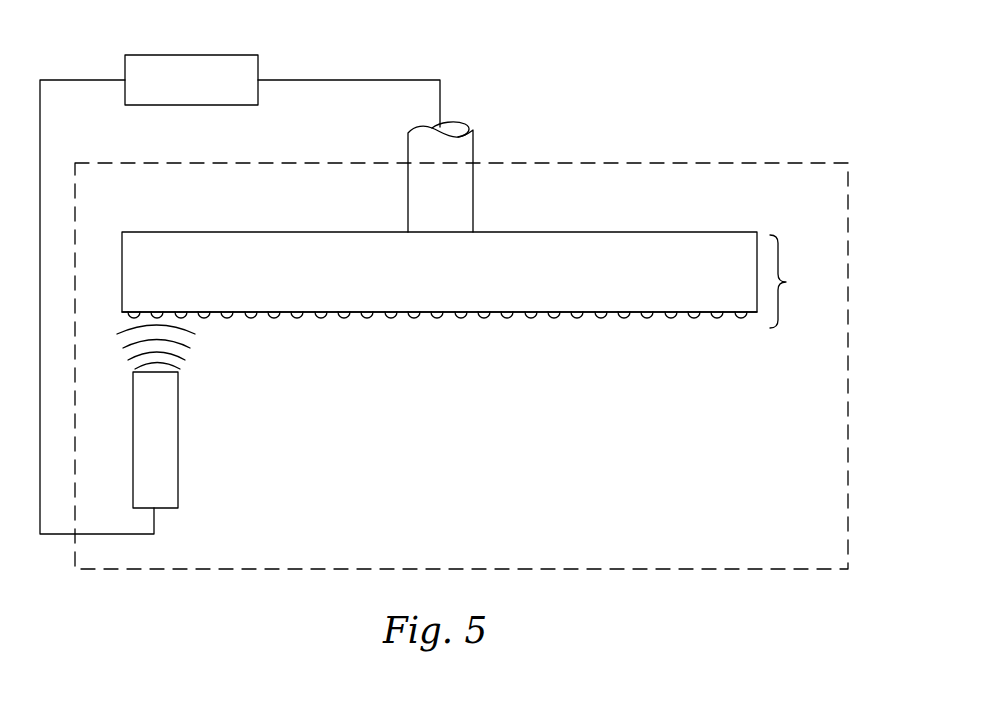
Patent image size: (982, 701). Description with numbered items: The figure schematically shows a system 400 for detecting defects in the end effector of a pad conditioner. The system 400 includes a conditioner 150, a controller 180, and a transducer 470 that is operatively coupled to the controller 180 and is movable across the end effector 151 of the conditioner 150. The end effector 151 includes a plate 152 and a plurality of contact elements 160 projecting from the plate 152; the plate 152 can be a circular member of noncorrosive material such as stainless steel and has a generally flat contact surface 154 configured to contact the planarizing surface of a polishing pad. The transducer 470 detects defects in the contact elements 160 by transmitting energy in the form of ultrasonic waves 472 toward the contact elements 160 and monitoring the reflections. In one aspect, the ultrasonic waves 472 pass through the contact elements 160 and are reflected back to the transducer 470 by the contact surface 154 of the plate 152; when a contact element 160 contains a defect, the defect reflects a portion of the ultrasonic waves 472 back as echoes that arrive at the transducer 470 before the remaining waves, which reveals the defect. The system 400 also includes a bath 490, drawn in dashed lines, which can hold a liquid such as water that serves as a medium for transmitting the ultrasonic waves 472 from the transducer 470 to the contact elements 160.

The system for detecting defects in the end effector 400 is at (750, 60).
The bath 490 is at (722, 571).
The controller 180 is at (162, 54).
The conditioner 150 is at (577, 128).
The end effector 151 is at (786, 282).
The plate 152 is at (535, 251).
The contact surface 154 is at (566, 312).
The contact elements 160 is at (601, 318).
The transducer 470 is at (178, 433).
The ultrasonic waves 472 is at (222, 320).